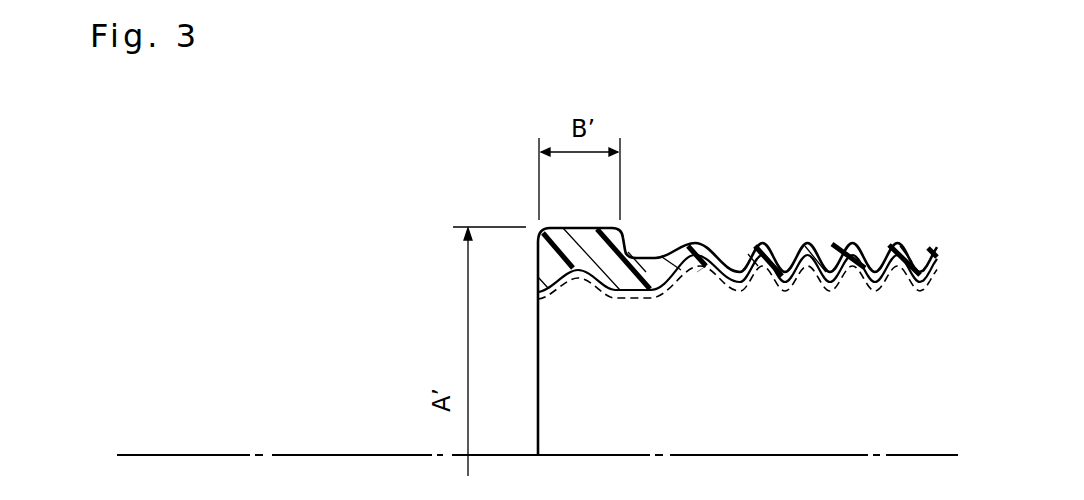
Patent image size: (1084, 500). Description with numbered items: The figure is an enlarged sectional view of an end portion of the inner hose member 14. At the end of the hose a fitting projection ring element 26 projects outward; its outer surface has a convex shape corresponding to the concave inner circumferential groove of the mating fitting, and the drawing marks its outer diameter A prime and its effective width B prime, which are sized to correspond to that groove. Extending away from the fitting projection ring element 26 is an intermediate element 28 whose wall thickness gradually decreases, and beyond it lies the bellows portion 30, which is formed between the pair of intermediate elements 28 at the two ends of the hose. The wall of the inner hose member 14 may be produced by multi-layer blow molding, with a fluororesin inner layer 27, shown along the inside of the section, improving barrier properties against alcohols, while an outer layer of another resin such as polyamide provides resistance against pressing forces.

The inner hose member 14 is at (820, 206).
The fitting projection ring element 26 is at (592, 253).
The inner layer 27 is at (549, 288).
The intermediate element 28 is at (697, 272).
The bellows portion 30 is at (853, 272).